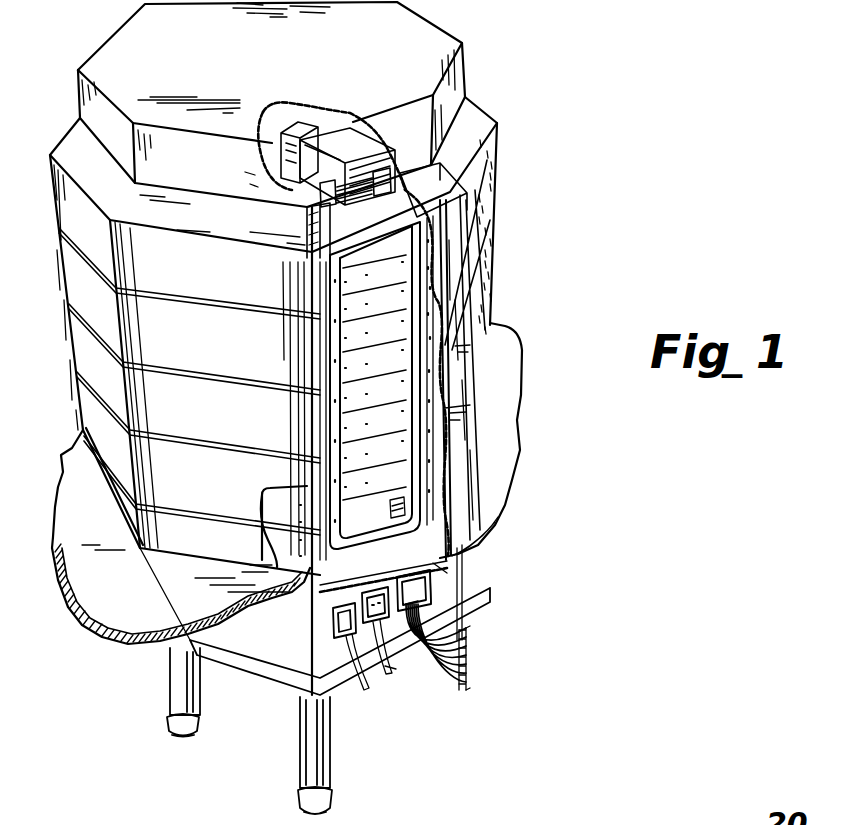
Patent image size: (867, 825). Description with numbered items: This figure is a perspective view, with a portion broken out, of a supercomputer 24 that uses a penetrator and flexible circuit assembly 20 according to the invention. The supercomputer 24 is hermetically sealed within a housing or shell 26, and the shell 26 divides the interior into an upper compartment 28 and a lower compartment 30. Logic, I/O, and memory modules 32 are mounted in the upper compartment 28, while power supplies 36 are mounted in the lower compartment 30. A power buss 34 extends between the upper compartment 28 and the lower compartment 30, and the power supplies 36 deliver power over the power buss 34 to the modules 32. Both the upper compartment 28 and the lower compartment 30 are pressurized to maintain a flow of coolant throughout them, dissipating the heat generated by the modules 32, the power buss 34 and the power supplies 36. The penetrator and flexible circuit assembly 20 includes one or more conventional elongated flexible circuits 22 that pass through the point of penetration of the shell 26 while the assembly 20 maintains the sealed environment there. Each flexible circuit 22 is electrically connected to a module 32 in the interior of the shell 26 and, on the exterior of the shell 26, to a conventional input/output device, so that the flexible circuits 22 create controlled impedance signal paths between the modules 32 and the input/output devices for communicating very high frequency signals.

The penetrator and flexible circuit assembly 20 is at (408, 602).
The flexible circuit 22 is at (460, 627).
The supercomputer 24 is at (565, 155).
The shell 26 is at (338, 632).
The upper compartment 28 is at (440, 112).
The lower compartment 30 is at (412, 430).
The logic, I/O, and memory modules 32 is at (347, 128).
The power buss 34 is at (395, 190).
The power supplies 36 is at (383, 468).